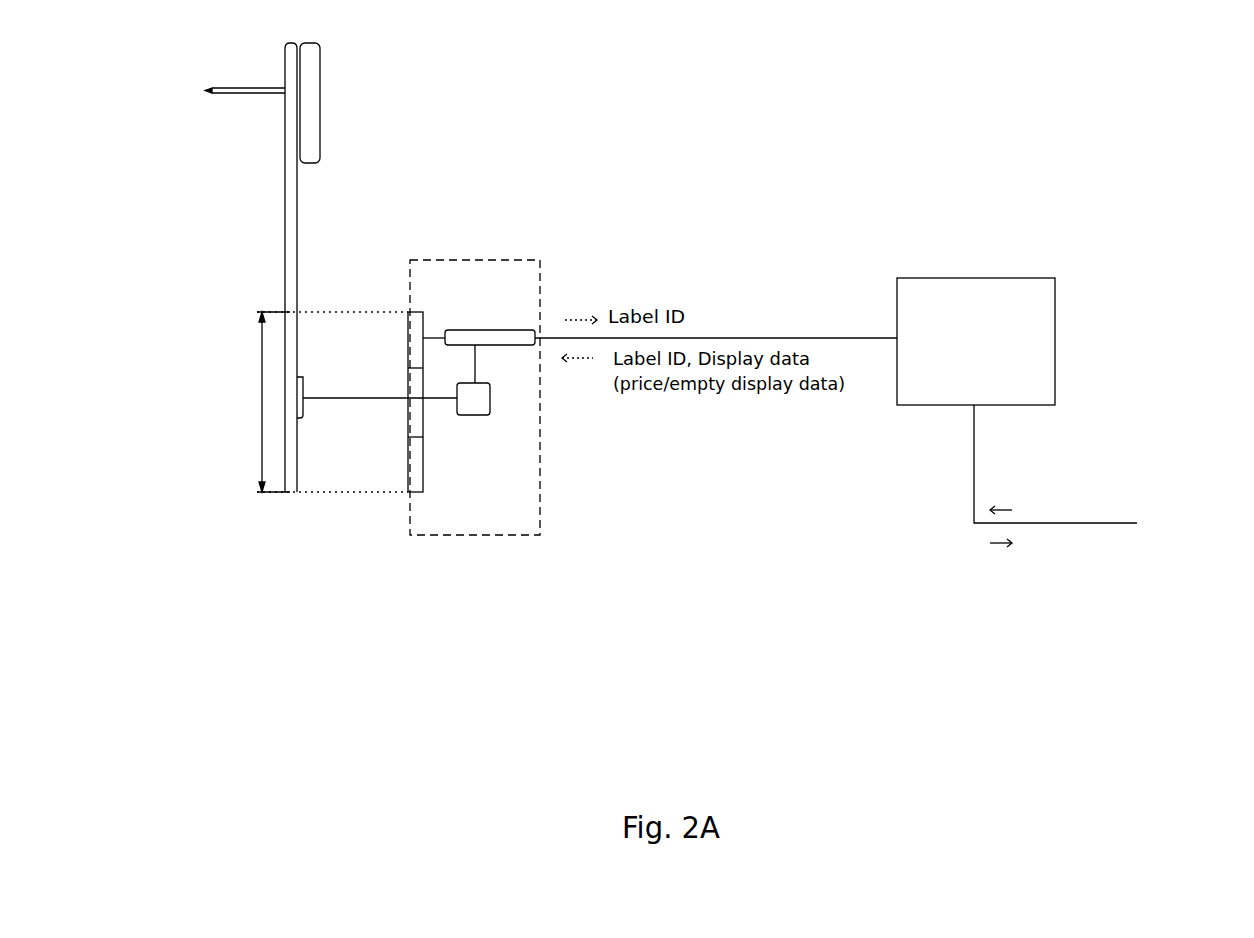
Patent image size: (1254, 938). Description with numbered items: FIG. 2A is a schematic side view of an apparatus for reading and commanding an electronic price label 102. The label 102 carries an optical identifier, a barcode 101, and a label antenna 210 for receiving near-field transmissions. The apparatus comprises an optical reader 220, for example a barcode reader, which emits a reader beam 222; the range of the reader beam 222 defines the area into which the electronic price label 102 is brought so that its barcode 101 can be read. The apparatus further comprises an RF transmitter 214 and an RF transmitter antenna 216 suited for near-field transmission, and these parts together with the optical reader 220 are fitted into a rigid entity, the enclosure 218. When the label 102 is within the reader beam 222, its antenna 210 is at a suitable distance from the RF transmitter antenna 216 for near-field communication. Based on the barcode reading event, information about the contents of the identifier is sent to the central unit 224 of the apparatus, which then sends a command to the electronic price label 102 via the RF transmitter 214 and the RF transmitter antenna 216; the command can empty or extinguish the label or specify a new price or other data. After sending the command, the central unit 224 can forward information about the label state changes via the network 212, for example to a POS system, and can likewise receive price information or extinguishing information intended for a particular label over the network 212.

The barcode 101 is at (390, 296).
The electronic price label 102 is at (415, 103).
The antenna of the electronic price label 210 is at (253, 378).
The network 212 is at (1110, 491).
The RF transmitter 214 is at (503, 328).
The RF transmitter antenna 216 is at (411, 494).
The enclosure 218 is at (607, 319).
The optical reader 220 is at (583, 462).
The reader beam 222 is at (323, 515).
The central unit 224 is at (976, 324).